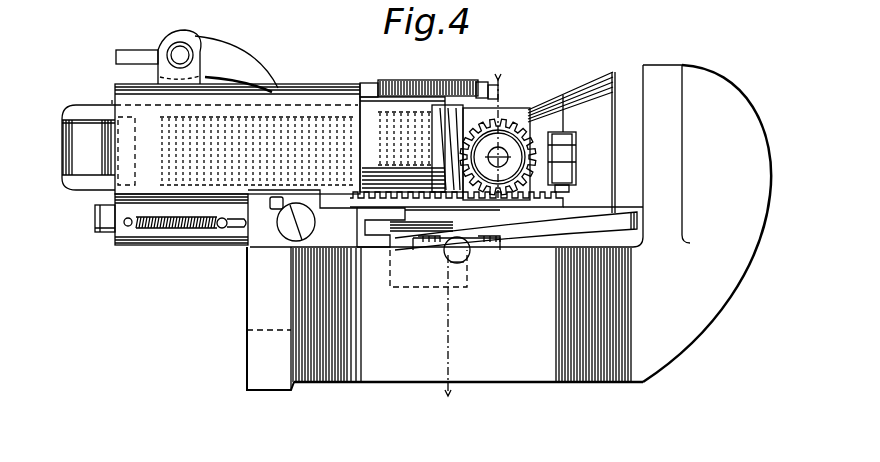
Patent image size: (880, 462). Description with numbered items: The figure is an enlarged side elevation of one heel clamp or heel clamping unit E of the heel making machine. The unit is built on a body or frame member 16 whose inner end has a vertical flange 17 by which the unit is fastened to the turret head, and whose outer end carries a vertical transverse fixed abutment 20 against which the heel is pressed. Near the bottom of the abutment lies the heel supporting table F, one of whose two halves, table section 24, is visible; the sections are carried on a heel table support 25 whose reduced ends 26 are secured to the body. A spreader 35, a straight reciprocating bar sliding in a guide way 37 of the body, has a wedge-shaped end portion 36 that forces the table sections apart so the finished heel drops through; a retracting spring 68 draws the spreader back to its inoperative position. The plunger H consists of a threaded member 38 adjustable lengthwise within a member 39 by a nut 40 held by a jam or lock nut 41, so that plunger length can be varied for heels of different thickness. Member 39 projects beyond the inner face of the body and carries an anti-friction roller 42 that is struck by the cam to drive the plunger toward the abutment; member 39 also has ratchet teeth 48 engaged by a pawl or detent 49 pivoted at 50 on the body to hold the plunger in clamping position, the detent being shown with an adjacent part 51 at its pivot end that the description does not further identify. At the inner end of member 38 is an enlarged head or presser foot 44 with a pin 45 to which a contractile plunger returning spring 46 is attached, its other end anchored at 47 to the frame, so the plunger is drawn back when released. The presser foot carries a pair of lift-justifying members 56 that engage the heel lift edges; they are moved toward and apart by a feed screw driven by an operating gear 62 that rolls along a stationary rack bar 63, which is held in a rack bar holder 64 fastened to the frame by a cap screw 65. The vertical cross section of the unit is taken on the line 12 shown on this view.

The section line 12 is at (473, 238).
The body or frame member 16 is at (482, 315).
The vertical flange 17 is at (246, 368).
The fixed abutment 20 is at (470, 156).
The table section 24 is at (560, 228).
The heel table support 25 is at (466, 256).
The reduced ends 26 is at (457, 263).
The spreader 35 is at (108, 234).
The wedge-shaped end portion 36 is at (390, 256).
The guide way 37 is at (115, 200).
The plunger member 38 is at (444, 106).
The plunger member 39 is at (336, 96).
The nut 40 is at (400, 98).
The jam or lock nut 41 is at (424, 96).
The anti-friction roller 42 is at (62, 172).
The enlarged head or presser foot 44 is at (491, 84).
The pin 45 is at (478, 84).
The contractile plunger returning spring 46 is at (381, 80).
The spring attachment point 47 is at (362, 82).
The ratchet teeth 48 is at (284, 92).
The pawl or detent 49 is at (244, 62).
The pivot 50 is at (192, 44).
The handle 51 is at (146, 44).
The lift-justifying members 56 is at (568, 94).
The operating gear 62 is at (505, 126).
The stationary rack bar 63 is at (411, 227).
The rack bar holder 64 is at (260, 216).
The cap screw 65 is at (285, 246).
The retracting spring 68 is at (150, 228).
The plunger H is at (112, 102).
The heel clamp or heel clamping unit E is at (612, 228).
The heel supporting table F is at (724, 328).